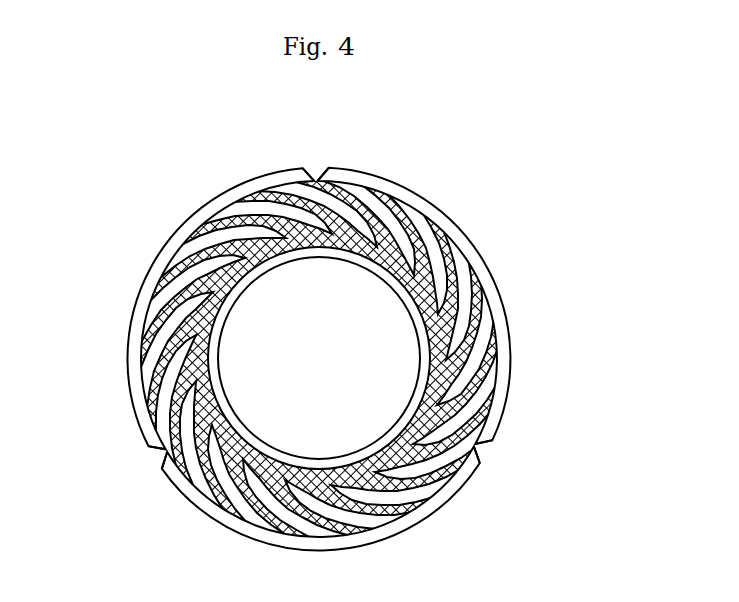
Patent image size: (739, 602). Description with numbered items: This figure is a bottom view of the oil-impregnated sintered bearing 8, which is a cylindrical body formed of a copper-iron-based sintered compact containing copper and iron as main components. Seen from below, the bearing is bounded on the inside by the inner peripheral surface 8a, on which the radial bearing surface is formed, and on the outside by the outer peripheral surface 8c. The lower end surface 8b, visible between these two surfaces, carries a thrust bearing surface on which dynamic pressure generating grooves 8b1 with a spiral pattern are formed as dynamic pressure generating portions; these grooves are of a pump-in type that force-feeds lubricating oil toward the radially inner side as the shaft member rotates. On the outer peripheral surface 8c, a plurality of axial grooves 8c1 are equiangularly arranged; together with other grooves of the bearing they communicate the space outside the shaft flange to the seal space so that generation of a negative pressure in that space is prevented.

The oil-impregnated sintered bearing 8 is at (538, 208).
The inner peripheral surface 8a is at (291, 456).
The lower end surface 8b is at (445, 243).
The dynamic pressure generating grooves 8b1 is at (247, 204).
The outer peripheral surface 8c is at (513, 377).
The axial grooves 8c1 is at (318, 179).